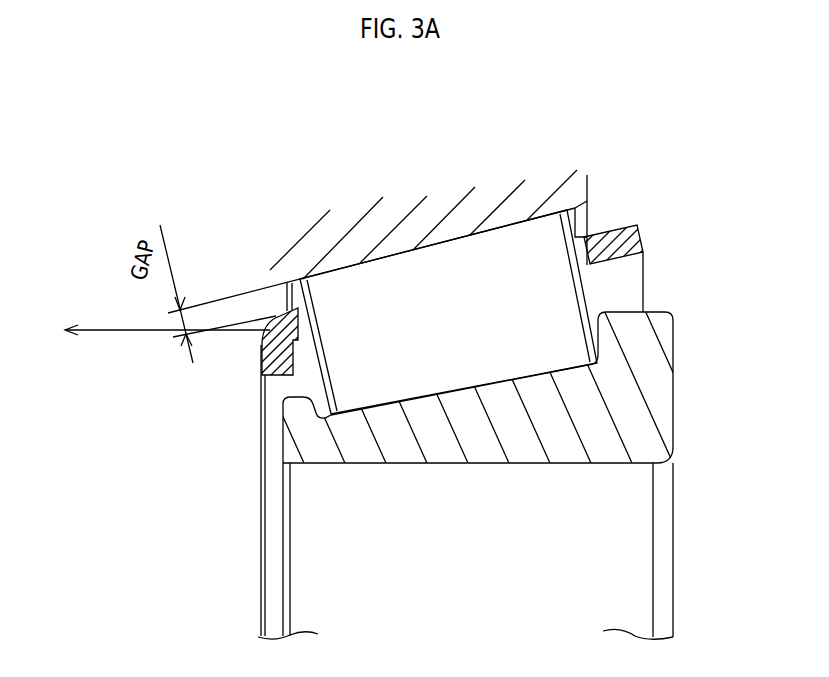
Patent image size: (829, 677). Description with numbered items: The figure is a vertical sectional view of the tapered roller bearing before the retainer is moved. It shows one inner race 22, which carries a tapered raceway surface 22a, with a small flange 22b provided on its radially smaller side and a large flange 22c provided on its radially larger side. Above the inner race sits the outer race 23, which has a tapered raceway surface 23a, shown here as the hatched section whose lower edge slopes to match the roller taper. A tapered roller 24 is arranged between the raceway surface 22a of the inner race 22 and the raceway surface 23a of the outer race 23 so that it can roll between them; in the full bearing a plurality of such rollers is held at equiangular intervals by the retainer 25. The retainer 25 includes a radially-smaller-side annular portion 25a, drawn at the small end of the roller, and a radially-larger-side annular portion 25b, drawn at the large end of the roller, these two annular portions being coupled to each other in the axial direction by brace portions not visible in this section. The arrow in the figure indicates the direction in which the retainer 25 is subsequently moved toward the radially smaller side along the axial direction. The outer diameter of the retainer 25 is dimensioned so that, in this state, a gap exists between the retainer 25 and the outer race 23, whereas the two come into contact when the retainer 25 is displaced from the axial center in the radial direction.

The inner race 22 is at (457, 460).
The tapered raceway surface 22a is at (450, 380).
The small flange 22b is at (302, 407).
The large flange 22c is at (607, 328).
The outer race 23 is at (401, 214).
The tapered raceway surface 23a is at (425, 245).
The tapered roller 24 is at (388, 383).
The retainer 25 is at (454, 388).
The radially-smaller-side annular portion 25a is at (270, 367).
The radially-larger-side annular portion 25b is at (637, 243).